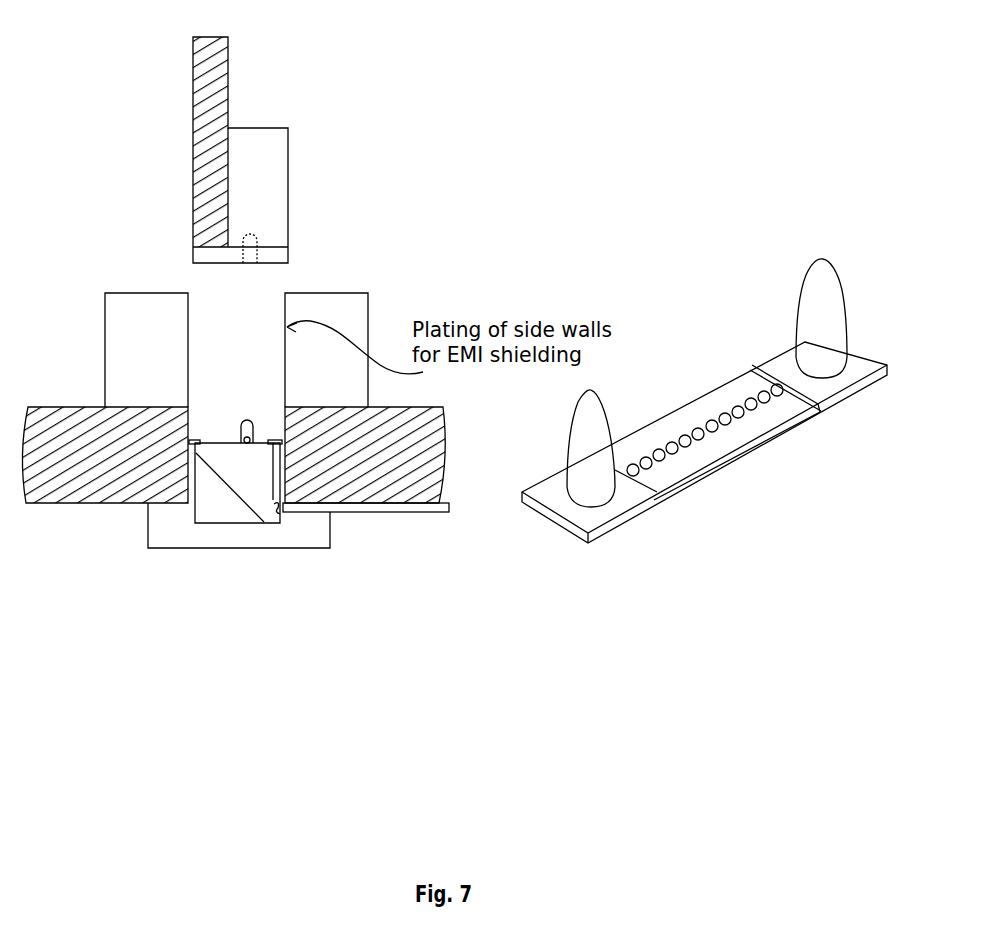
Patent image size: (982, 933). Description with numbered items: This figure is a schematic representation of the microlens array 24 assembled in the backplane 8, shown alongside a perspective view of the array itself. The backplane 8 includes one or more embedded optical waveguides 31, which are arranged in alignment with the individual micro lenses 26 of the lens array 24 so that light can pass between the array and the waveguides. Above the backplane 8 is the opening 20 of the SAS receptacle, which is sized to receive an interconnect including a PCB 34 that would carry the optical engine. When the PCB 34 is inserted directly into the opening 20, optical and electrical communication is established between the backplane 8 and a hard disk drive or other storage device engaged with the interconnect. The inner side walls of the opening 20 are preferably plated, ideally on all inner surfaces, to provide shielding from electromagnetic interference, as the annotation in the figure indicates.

The PCB 34 is at (215, 65).
The opening 20 is at (213, 307).
The backplane 8 is at (395, 484).
The optical waveguides 31 is at (443, 510).
The microlens array 24 is at (251, 490).
The micro lenses 26 is at (278, 508).